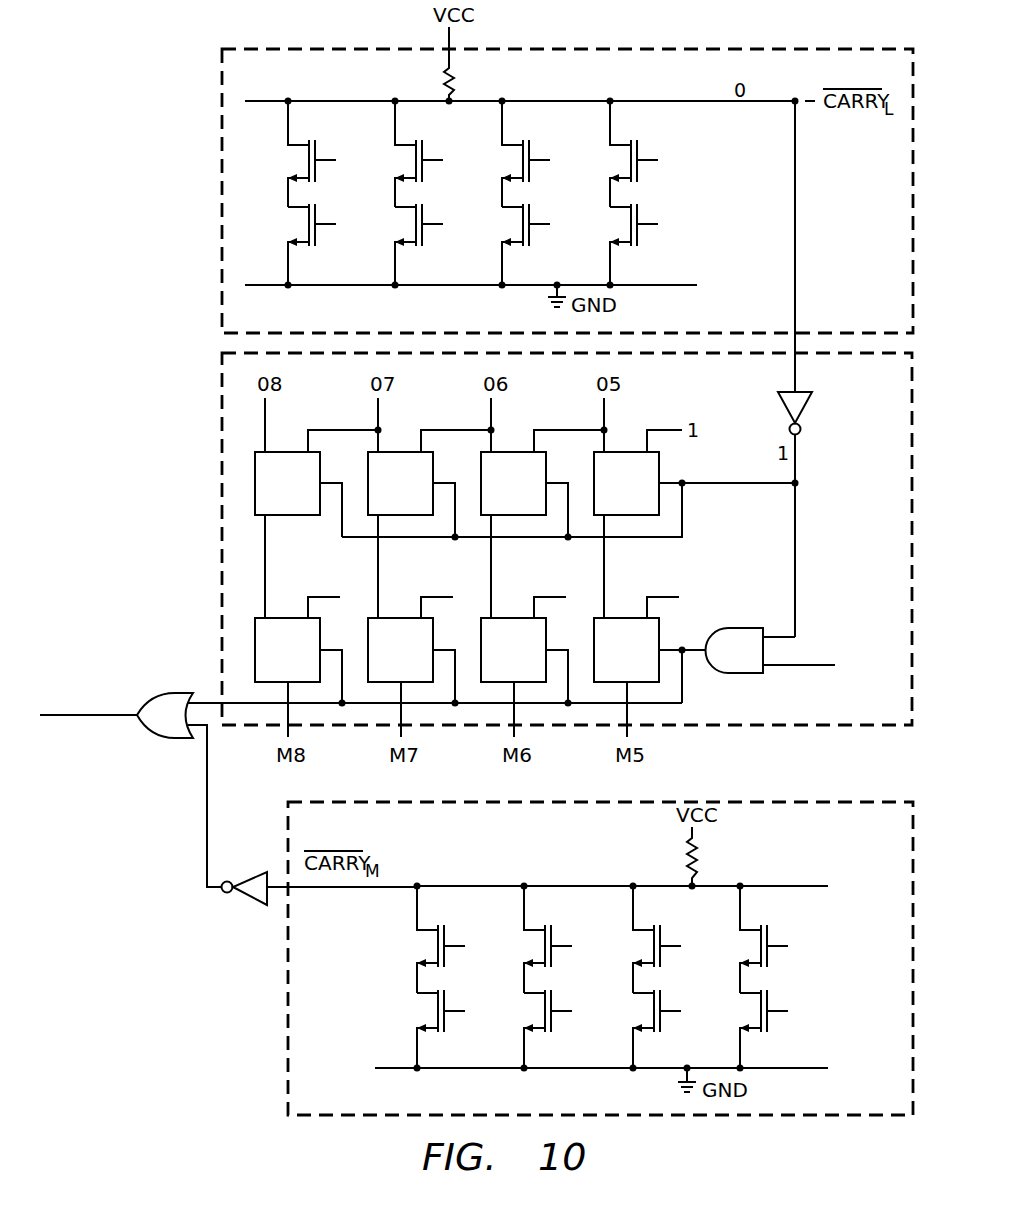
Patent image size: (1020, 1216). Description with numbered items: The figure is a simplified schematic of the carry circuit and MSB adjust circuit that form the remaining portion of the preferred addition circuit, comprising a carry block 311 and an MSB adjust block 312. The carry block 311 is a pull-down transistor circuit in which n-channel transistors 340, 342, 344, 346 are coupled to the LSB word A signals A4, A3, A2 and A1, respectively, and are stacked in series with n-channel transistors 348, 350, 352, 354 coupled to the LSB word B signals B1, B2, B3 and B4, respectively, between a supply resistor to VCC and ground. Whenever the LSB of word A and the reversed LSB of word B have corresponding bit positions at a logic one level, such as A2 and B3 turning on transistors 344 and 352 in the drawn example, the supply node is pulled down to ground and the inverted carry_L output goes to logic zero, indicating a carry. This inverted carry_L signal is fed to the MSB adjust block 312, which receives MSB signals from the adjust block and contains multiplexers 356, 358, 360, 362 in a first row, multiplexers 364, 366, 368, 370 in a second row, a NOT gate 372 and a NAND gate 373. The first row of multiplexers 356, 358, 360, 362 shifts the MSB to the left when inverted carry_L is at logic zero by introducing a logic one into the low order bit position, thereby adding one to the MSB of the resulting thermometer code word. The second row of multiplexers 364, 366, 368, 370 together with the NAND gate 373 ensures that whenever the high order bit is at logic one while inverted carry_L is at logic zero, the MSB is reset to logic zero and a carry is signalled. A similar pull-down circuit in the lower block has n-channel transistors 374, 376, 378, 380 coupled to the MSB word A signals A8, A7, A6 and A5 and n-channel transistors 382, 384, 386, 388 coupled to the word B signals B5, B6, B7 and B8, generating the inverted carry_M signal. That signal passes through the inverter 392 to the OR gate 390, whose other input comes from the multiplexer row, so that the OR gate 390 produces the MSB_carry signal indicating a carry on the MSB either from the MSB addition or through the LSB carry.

The carry block 311 is at (222, 78).
The MSB adjust block 312 is at (222, 398).
The n-channel transistor 340 is at (310, 140).
The n-channel transistor 342 is at (417, 140).
The n-channel transistor 344 is at (524, 140).
The n-channel transistor 346 is at (632, 140).
The n-channel transistor 348 is at (310, 246).
The n-channel transistor 350 is at (417, 246).
The n-channel transistor 352 is at (524, 246).
The n-channel transistor 354 is at (632, 246).
The multiplexer 356 is at (285, 452).
The multiplexer 358 is at (398, 452).
The multiplexer 360 is at (511, 452).
The multiplexer 362 is at (624, 452).
The multiplexer 364 is at (285, 618).
The multiplexer 366 is at (398, 618).
The multiplexer 368 is at (511, 618).
The multiplexer 370 is at (624, 618).
The NOT gate 372 is at (806, 410).
The NAND gate 373 is at (740, 628).
The n-channel transistor 374 is at (439, 926).
The n-channel transistor 376 is at (546, 926).
The n-channel transistor 378 is at (655, 926).
The n-channel transistor 380 is at (762, 926).
The n-channel transistor 382 is at (439, 1032).
The n-channel transistor 384 is at (546, 1032).
The n-channel transistor 386 is at (655, 1032).
The n-channel transistor 388 is at (762, 1032).
The OR gate 390 is at (175, 738).
The inverter 392 is at (250, 906).